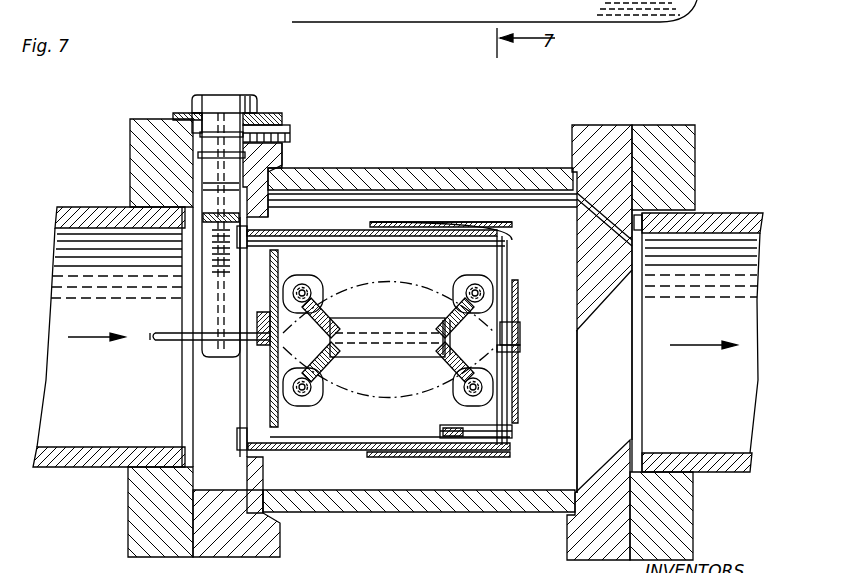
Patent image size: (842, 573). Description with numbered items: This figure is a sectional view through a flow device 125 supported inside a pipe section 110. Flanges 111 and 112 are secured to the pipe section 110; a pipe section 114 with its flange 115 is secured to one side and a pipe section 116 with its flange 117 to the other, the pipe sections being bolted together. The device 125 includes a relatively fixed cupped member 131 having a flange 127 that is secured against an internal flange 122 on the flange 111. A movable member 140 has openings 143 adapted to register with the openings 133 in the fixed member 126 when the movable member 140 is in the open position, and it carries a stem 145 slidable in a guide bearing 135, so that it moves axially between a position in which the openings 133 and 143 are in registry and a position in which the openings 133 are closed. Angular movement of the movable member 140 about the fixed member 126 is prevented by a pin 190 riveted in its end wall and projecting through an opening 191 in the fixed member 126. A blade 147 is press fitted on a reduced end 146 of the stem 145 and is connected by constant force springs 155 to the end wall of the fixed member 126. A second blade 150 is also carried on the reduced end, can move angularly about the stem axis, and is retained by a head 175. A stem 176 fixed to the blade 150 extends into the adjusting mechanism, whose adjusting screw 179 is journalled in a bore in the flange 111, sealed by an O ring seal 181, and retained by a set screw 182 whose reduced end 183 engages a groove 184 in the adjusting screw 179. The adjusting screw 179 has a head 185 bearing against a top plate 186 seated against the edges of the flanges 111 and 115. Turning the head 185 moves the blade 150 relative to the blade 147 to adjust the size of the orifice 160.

The pipe section 110 is at (435, 175).
The flange 111 is at (283, 148).
The flange 112 is at (575, 137).
The pipe section 114 is at (72, 207).
The flange 115 is at (133, 156).
The pipe section 116 is at (735, 217).
The flange 117 is at (694, 144).
The internal flange 122 is at (305, 188).
The device 125 is at (532, 373).
The fixed member 126 is at (352, 239).
The flange 127 is at (268, 215).
The cupped member 131 is at (334, 228).
The openings 133 is at (468, 233).
The guide bearing 135 is at (487, 336).
The movable member 140 is at (522, 298).
The openings 143 is at (477, 225).
The stem 145 is at (290, 403).
The reduced end 146 is at (267, 350).
The blade 147 is at (278, 268).
The second blade 150 is at (267, 362).
The constant force springs 155 is at (390, 276).
The orifice 160 is at (285, 452).
The head 175 is at (265, 318).
The stem 176 is at (165, 340).
The adjusting screw 179 is at (213, 190).
The O ring seal 181 is at (215, 155).
The set screw 182 is at (283, 125).
The reduced end 183 is at (250, 108).
The groove 184 is at (200, 134).
The head 185 is at (223, 100).
The top plate 186 is at (186, 113).
The pin 190 is at (422, 452).
The opening 191 is at (490, 438).